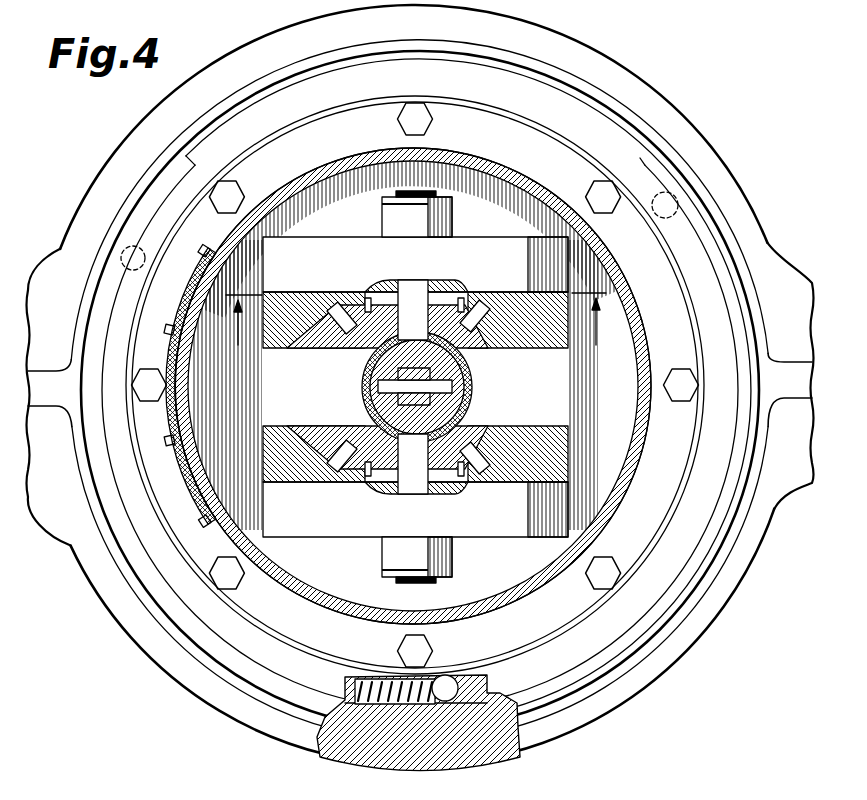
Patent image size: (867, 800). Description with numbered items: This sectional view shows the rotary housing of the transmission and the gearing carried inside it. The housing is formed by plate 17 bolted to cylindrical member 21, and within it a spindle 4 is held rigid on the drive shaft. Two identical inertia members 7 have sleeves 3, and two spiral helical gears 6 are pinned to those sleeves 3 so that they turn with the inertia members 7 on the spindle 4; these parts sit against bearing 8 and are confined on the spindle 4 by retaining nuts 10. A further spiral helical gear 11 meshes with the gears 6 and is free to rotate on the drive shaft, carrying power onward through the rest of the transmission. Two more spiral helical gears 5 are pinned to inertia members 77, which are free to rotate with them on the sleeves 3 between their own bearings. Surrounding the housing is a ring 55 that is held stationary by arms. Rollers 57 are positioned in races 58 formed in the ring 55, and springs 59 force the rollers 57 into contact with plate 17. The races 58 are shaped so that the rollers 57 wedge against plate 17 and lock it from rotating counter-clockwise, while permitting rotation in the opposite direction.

The sleeves 3 is at (358, 326).
The spindle 4 is at (438, 194).
The spiral helical gears 5 is at (514, 418).
The spiral helical type gears 6 is at (468, 338).
The inertia members 7 is at (328, 257).
The bearing 8 is at (366, 352).
The retaining nuts 10 is at (436, 222).
The spiral helical type gear 11 is at (458, 395).
The plate 17 is at (628, 452).
The cylindrical member 21 is at (612, 506).
The ring 55 is at (676, 122).
The rollers 57 is at (138, 266).
The races 58 is at (410, 705).
The springs 59 is at (376, 704).
The inertia members 77 is at (287, 347).